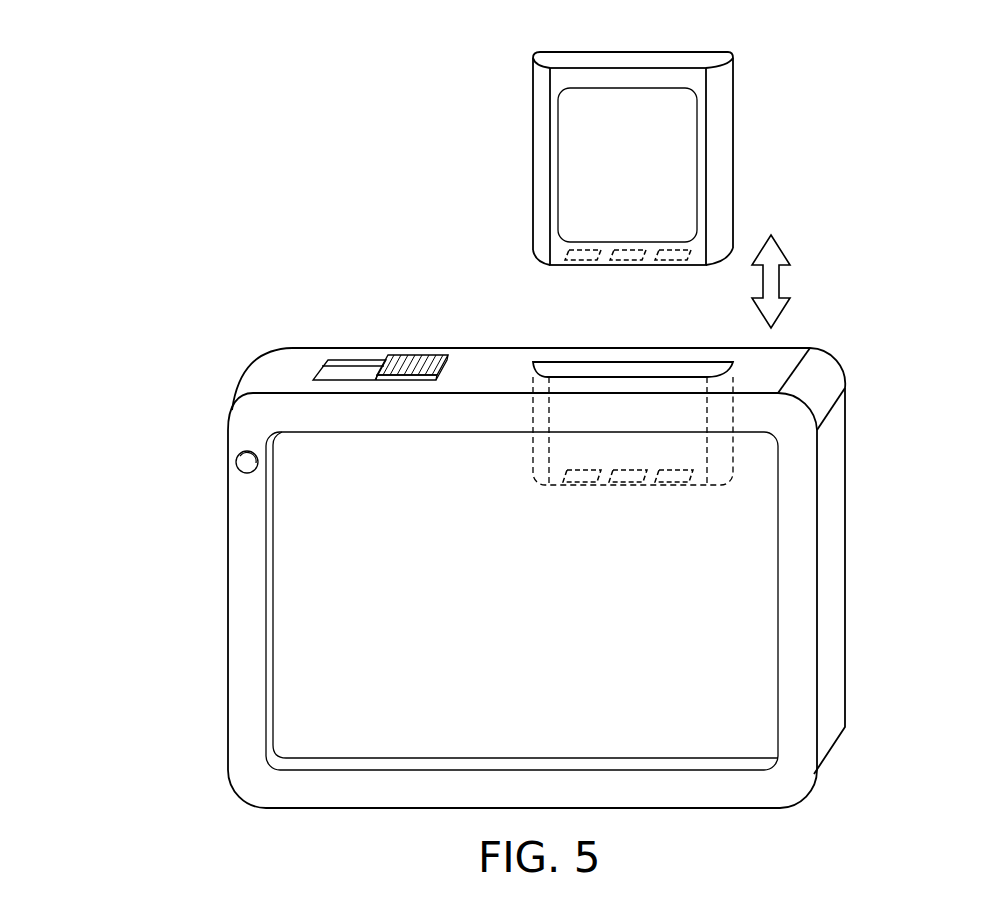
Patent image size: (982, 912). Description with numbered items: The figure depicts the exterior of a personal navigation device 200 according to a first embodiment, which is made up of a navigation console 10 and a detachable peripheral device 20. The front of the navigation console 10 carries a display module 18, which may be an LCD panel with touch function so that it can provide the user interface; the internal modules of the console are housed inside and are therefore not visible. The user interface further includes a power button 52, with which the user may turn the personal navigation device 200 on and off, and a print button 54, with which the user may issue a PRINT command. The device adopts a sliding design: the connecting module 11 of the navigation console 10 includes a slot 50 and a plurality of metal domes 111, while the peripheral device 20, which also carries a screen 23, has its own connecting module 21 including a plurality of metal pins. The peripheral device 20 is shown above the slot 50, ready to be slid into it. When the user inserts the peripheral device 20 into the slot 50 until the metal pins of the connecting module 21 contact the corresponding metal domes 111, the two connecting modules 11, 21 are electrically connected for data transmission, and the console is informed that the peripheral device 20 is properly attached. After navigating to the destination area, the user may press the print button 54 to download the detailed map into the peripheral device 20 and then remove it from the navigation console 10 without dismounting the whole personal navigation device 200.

The personal navigation device 200 is at (200, 247).
The navigation console 10 is at (845, 451).
The connecting module 11 is at (534, 462).
The metal domes 111 is at (674, 483).
The display module 18 is at (738, 633).
The peripheral device 20 is at (700, 52).
The connecting module 21 is at (671, 261).
The screen 23 is at (637, 171).
The slot 50 is at (627, 370).
The power button 52 is at (443, 360).
The print button 54 is at (245, 463).